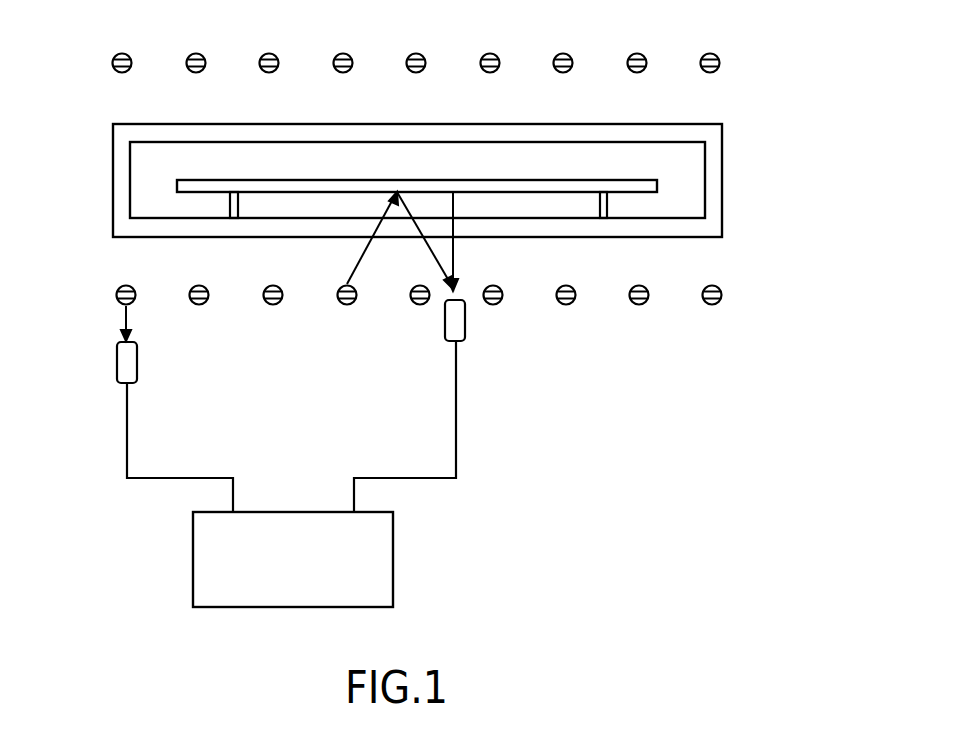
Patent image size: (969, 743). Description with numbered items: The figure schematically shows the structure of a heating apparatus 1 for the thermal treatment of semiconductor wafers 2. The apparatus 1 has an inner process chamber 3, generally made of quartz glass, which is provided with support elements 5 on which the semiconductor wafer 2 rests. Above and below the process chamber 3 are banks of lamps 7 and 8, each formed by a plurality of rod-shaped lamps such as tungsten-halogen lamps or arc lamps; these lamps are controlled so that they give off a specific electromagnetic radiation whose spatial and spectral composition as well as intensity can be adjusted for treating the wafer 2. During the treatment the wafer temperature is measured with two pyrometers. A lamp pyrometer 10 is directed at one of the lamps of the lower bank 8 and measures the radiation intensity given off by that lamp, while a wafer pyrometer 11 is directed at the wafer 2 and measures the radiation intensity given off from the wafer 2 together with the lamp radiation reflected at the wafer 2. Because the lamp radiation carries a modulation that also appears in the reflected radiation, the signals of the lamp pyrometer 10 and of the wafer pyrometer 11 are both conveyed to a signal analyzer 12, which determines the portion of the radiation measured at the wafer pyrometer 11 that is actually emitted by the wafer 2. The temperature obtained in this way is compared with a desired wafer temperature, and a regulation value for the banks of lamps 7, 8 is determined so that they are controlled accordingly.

The heating apparatus 1 is at (638, 381).
The semiconductor wafer 2 is at (638, 176).
The inner process chamber 3 is at (738, 206).
The support elements 5 is at (608, 198).
The bank of lamps 7 is at (742, 56).
The bank of lamps 8 is at (94, 290).
The lamp pyrometer 10 is at (118, 366).
The wafer pyrometer 11 is at (467, 330).
The signal analyzer 12 is at (380, 545).